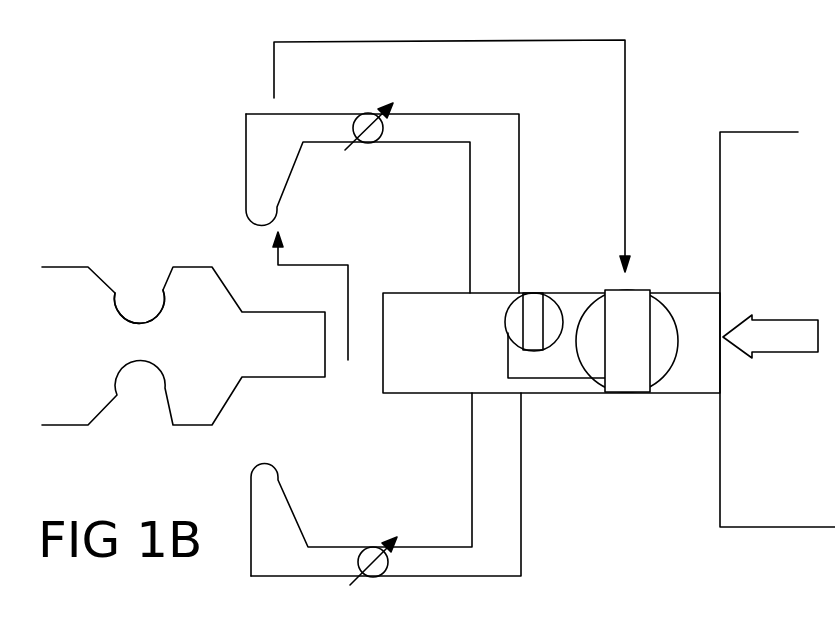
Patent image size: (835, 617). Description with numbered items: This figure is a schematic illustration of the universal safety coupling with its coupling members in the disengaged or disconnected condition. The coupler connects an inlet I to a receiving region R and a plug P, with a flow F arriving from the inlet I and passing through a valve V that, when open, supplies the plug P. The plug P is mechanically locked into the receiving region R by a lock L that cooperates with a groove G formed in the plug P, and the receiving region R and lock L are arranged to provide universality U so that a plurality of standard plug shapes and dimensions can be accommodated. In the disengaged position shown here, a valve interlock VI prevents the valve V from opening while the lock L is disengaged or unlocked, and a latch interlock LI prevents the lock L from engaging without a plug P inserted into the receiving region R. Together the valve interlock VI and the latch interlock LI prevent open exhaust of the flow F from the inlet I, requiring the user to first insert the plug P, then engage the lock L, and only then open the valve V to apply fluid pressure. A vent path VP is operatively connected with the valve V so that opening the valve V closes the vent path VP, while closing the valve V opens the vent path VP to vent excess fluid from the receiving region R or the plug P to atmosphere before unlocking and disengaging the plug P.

The valve interlock VI is at (452, 139).
The universality U is at (358, 118).
The lock L is at (382, 203).
The latch interlock LI is at (310, 296).
The plug P is at (183, 346).
The groove G is at (139, 306).
The receiving region R is at (386, 489).
The vent path VP is at (534, 322).
The valve V is at (627, 341).
The inlet I is at (777, 329).
The flow F is at (770, 336).